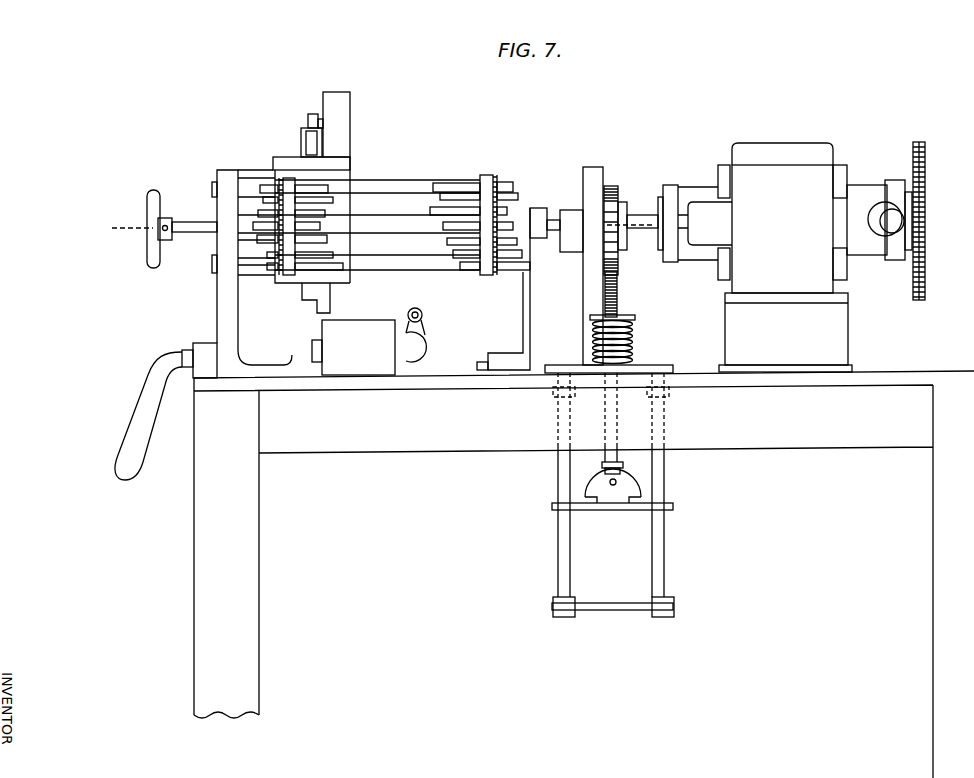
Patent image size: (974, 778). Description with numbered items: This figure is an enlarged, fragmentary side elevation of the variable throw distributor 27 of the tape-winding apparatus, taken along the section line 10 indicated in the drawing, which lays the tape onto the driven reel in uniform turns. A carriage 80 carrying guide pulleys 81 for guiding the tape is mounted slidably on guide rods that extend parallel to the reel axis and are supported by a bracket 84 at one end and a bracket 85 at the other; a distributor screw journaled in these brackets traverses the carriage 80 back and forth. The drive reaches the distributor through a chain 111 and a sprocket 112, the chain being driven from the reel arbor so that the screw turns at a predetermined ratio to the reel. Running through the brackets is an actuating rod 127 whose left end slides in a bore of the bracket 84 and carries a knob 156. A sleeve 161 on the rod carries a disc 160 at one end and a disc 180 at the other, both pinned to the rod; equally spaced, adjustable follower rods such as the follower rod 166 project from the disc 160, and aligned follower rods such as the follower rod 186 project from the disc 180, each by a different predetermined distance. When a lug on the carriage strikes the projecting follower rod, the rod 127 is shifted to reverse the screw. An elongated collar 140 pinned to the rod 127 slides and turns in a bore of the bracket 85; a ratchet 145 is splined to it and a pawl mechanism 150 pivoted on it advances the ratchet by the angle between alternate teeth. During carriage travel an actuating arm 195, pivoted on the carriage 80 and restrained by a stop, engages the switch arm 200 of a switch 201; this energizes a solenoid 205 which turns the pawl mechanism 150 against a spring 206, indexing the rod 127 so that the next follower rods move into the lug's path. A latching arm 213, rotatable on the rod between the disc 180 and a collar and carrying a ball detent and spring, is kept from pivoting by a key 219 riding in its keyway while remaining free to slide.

The machine axis 10 is at (117, 218).
The variable throw distributor 27 is at (612, 156).
The carriage 80 is at (344, 97).
The guide pulleys 81 is at (300, 143).
The bracket 84 is at (228, 317).
The bracket 85 is at (590, 303).
The chain 111 is at (922, 236).
The sprocket 112 is at (925, 286).
The actuating rod 127 is at (200, 233).
The elongated collar 140 is at (566, 235).
The ratchet 145 is at (608, 196).
The pawl mechanism 150 is at (622, 246).
The knob 156 is at (148, 252).
The disc 160 is at (288, 185).
The sleeve 161 is at (380, 234).
The follower rod 166 is at (320, 228).
The disc 180 is at (485, 180).
The follower rod 186 is at (443, 227).
The actuating arm 195 is at (320, 300).
The switch arm 200 is at (414, 332).
The switch 201 is at (357, 368).
The solenoid 205 is at (640, 556).
The spring 206 is at (632, 353).
The latching arm 213 is at (528, 292).
The key 219 is at (485, 372).